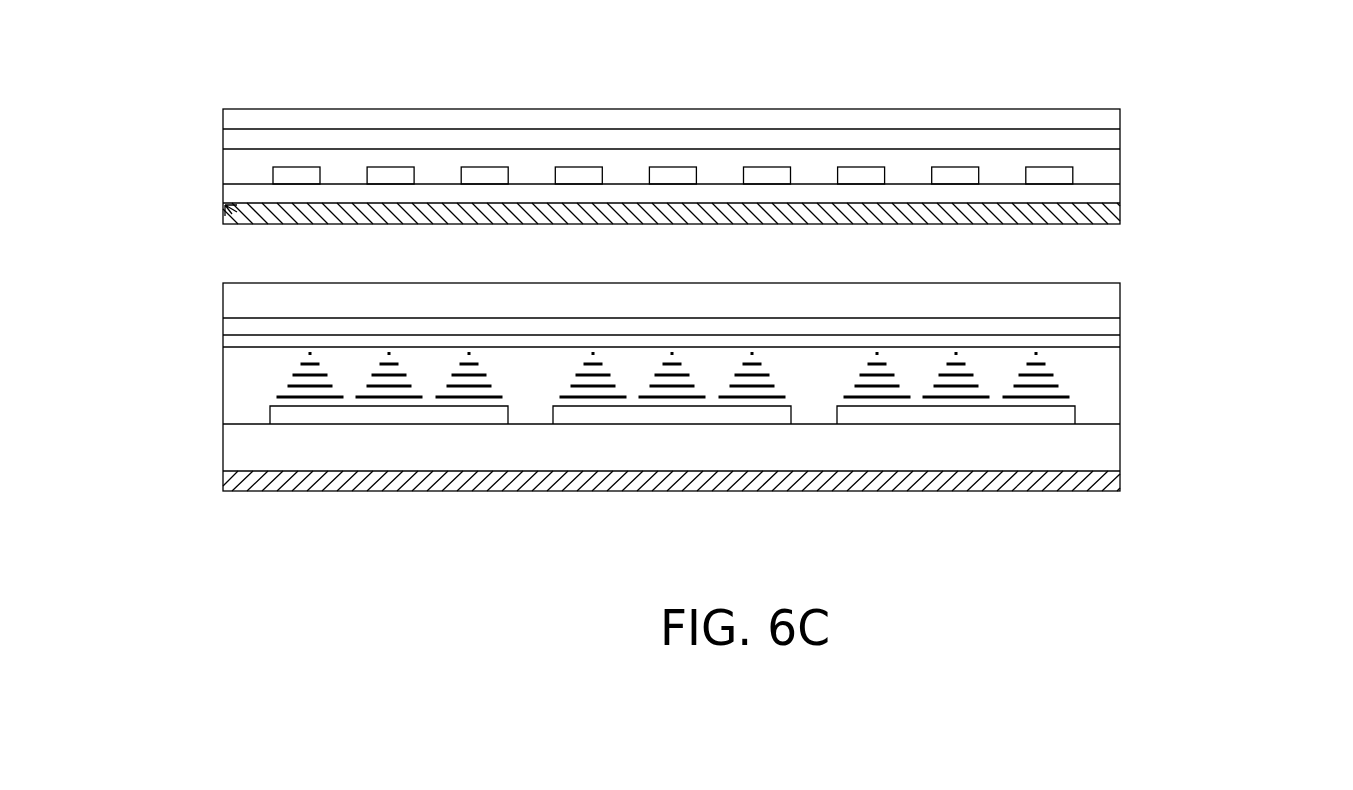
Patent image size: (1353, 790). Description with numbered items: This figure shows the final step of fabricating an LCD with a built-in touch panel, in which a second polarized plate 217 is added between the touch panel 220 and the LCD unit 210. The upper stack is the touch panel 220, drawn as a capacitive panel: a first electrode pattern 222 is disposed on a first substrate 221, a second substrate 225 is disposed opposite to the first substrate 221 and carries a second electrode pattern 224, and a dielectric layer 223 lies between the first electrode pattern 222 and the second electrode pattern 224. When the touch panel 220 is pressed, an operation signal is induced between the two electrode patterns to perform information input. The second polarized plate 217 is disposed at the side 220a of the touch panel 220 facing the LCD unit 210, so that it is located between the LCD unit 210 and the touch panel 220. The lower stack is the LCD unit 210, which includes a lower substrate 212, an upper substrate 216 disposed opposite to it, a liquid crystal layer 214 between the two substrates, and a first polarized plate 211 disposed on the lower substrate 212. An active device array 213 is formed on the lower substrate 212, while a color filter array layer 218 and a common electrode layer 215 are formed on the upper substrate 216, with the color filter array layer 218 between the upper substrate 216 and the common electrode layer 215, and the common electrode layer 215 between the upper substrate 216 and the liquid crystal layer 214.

The LCD unit 210 is at (764, 390).
The first polarized plate 211 is at (730, 494).
The lower substrate 212 is at (1103, 448).
The active device array 213 is at (1065, 415).
The liquid crystal layer 214 is at (1068, 377).
The common electrode layer 215 is at (1113, 340).
The upper substrate 216 is at (1113, 300).
The second polarized plate 217 is at (1113, 213).
The color filter array layer 218 is at (1113, 326).
The touch panel 220 is at (707, 141).
The side of the touch panel 220a is at (226, 220).
The first substrate 221 is at (1113, 197).
The first electrode pattern 222 is at (1068, 176).
The dielectric layer 223 is at (1113, 160).
The second electrode pattern 224 is at (1113, 138).
The second substrate 225 is at (1113, 118).